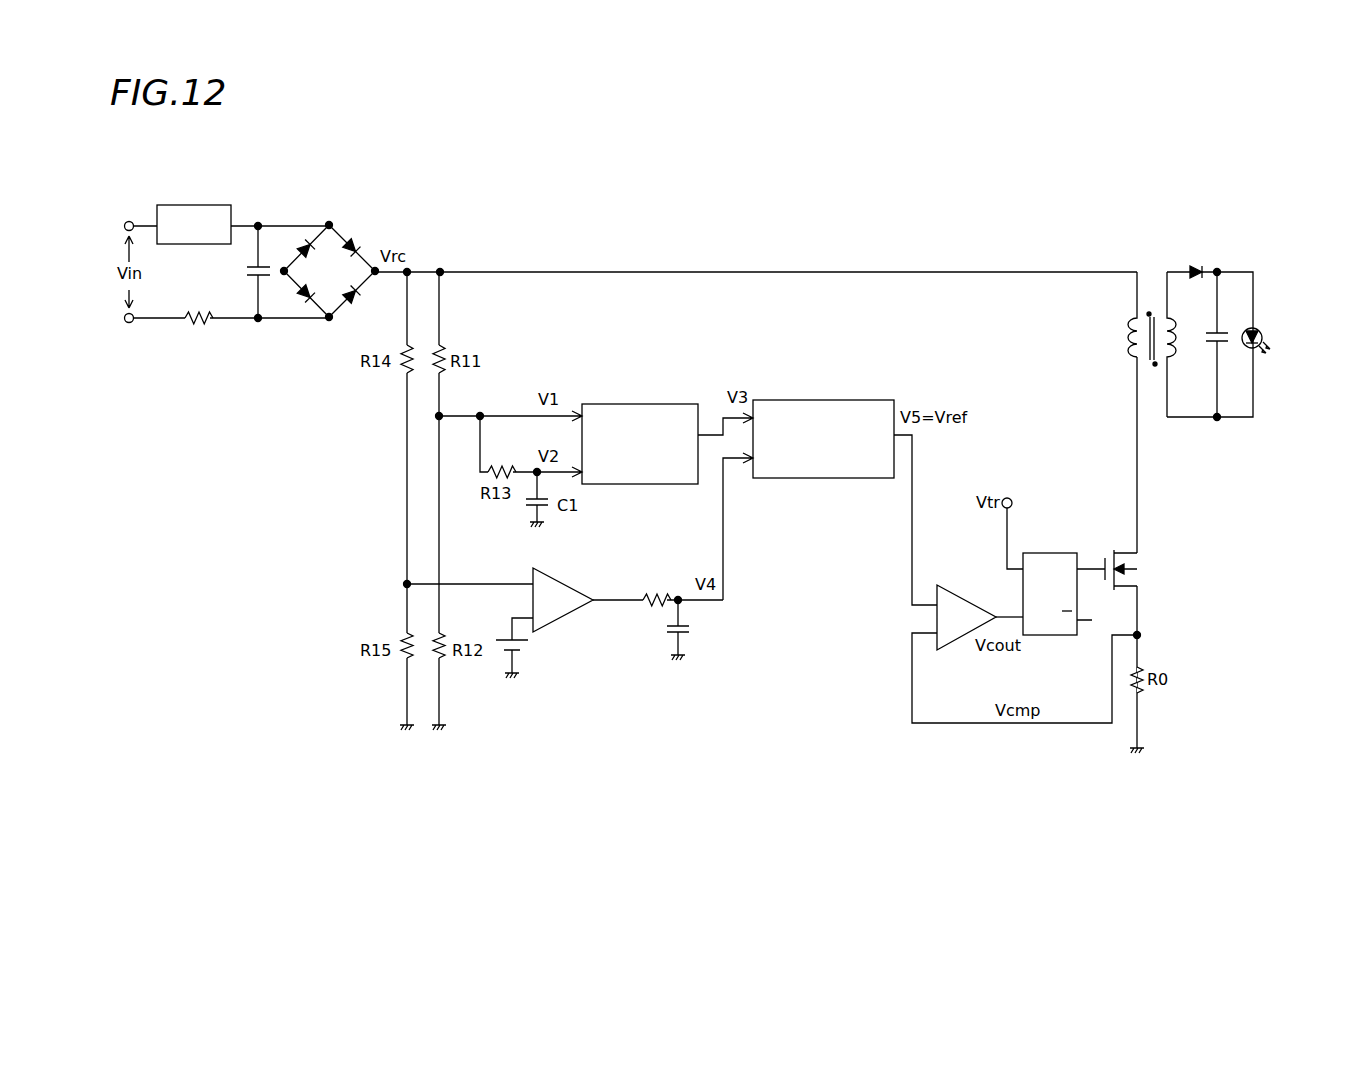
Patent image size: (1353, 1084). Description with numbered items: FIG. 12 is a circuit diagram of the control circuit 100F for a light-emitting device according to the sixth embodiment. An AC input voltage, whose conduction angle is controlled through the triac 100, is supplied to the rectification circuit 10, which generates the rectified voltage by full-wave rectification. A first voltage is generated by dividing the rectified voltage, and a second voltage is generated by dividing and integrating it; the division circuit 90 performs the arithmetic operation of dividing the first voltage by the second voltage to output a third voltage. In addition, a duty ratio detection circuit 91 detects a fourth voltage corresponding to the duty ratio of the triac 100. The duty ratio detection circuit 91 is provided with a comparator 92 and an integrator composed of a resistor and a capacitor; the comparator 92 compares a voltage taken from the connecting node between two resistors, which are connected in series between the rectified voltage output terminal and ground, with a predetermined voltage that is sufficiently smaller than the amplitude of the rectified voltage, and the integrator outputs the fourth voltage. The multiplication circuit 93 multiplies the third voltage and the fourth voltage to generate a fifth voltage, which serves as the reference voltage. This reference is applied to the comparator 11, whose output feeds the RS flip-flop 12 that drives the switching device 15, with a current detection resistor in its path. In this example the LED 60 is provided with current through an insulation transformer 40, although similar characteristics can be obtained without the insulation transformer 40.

The triac 100 is at (201, 199).
The rectification circuit 10 is at (366, 242).
The control circuit 100F is at (756, 261).
The insulation transformer 40 is at (1150, 297).
The LED 60 is at (1268, 328).
The division circuit 90 is at (623, 398).
The multiplication circuit 93 is at (807, 388).
The comparator 11 is at (952, 590).
The RS flip-flop 12 is at (1047, 540).
The switching device 15 is at (1148, 572).
The comparator 92 is at (588, 625).
The duty ratio detection circuit 91 is at (711, 674).